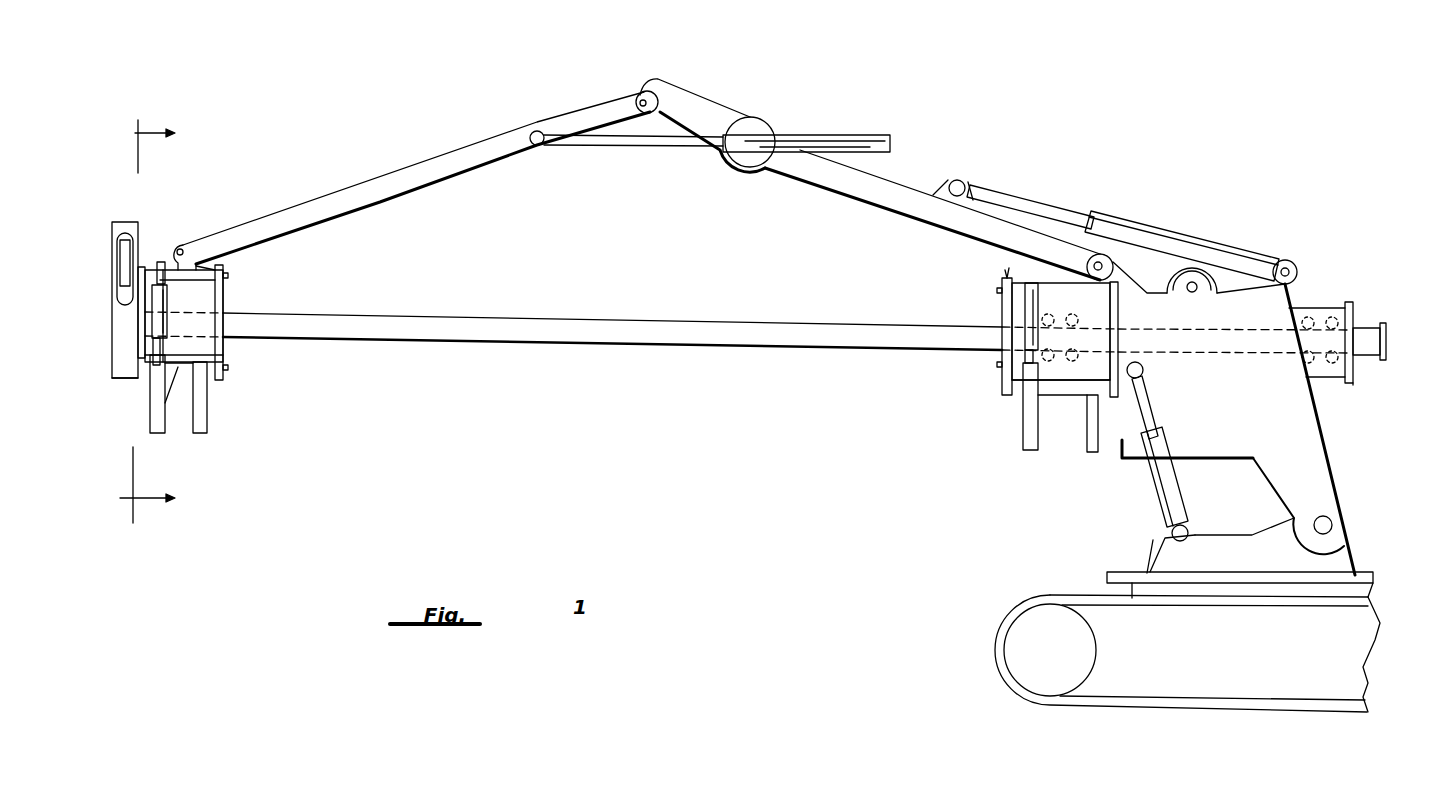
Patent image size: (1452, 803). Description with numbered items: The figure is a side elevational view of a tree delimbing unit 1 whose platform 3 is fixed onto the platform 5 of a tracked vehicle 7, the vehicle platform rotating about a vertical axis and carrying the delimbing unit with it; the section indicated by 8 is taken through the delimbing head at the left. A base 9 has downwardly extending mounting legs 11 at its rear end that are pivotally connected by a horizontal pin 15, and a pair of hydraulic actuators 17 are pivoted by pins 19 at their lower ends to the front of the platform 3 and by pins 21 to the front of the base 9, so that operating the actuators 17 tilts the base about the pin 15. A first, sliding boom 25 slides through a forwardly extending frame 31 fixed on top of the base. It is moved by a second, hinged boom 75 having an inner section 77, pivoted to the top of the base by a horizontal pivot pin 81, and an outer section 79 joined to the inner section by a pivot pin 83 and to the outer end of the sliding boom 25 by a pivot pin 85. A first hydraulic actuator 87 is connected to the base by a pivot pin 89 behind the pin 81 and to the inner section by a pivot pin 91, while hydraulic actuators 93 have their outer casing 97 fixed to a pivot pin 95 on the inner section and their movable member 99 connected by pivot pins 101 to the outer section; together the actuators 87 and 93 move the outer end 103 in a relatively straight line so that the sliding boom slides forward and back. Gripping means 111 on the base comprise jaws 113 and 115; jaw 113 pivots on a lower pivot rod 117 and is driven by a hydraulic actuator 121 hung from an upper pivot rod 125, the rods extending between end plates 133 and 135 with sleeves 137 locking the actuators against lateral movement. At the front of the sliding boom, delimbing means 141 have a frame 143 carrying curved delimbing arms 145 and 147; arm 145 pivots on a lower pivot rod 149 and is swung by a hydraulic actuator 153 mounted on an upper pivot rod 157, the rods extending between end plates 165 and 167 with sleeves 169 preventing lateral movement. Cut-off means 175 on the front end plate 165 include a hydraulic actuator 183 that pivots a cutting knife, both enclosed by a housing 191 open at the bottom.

The tree delimbing unit 1 is at (1395, 397).
The platform 3 is at (1350, 565).
The platform 5 is at (1120, 572).
The tracked vehicle 7 is at (996, 608).
The section line 8- 8 is at (158, 321).
The base 9 is at (1335, 431).
The mounting legs 11 is at (1340, 478).
The horizontal pin 15 is at (1332, 525).
The hydraulic actuators 17 is at (1158, 500).
The pins 19 is at (1172, 533).
The pins 21 is at (1143, 370).
The sliding boom 25 is at (578, 349).
The frame 31 is at (1003, 270).
The hinged boom 75 is at (900, 212).
The inner boom section 77 is at (960, 230).
The outer boom section 79 is at (450, 182).
The horizontal pivot pin 81 is at (1103, 262).
The horizontal pivot pin 83 is at (643, 100).
The horizontal pivot pin 85 is at (183, 245).
The first hydraulic actuator 87 is at (1180, 235).
The pivot pin 89 is at (1287, 261).
The pivot pin 91 is at (958, 181).
The hydraulic actuators 93 is at (862, 125).
The pivot pin 95 is at (750, 118).
The outer casing 97 is at (800, 135).
The movable member 99 is at (630, 148).
The pivot pins 101 is at (537, 132).
The outer end 103 is at (163, 268).
The gripping means 111 is at (995, 414).
The jaw 113 is at (1023, 448).
The jaw 115 is at (1090, 450).
The lower pivot rod 117 is at (1003, 384).
The hydraulic actuator 121 is at (1000, 320).
The upper pivot rod 125 is at (1000, 291).
The end plate 133 is at (1000, 365).
The end plate 135 is at (1120, 342).
The sleeves 137 is at (1058, 283).
The delimbing means 141 is at (265, 407).
The frame 143 is at (240, 299).
The delimbing arm 145 is at (162, 433).
The delimbing arm 147 is at (205, 433).
The lower pivot rod 149 is at (228, 368).
The hydraulic actuator 153 is at (158, 312).
The upper pivot rod 157 is at (228, 276).
The end plate 165 is at (140, 345).
The end plate 167 is at (228, 352).
The sleeves 169 is at (248, 265).
The cut-off means 175 is at (104, 374).
The hydraulic actuator 183 is at (120, 262).
The housing 191 is at (126, 222).